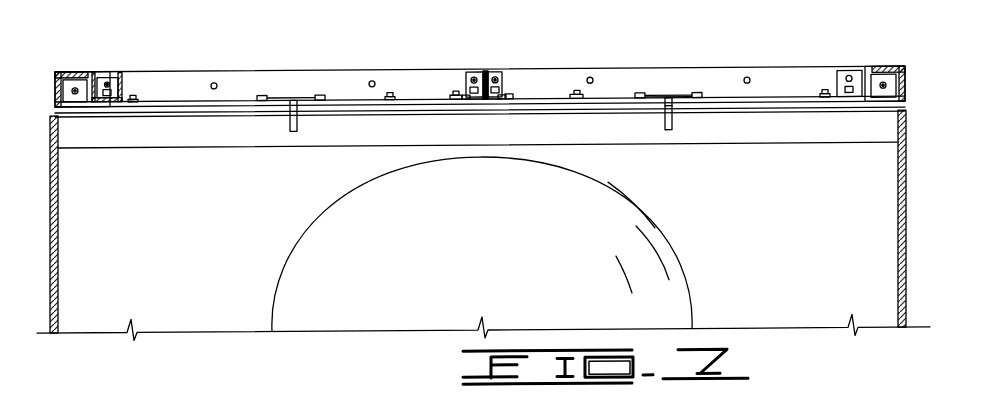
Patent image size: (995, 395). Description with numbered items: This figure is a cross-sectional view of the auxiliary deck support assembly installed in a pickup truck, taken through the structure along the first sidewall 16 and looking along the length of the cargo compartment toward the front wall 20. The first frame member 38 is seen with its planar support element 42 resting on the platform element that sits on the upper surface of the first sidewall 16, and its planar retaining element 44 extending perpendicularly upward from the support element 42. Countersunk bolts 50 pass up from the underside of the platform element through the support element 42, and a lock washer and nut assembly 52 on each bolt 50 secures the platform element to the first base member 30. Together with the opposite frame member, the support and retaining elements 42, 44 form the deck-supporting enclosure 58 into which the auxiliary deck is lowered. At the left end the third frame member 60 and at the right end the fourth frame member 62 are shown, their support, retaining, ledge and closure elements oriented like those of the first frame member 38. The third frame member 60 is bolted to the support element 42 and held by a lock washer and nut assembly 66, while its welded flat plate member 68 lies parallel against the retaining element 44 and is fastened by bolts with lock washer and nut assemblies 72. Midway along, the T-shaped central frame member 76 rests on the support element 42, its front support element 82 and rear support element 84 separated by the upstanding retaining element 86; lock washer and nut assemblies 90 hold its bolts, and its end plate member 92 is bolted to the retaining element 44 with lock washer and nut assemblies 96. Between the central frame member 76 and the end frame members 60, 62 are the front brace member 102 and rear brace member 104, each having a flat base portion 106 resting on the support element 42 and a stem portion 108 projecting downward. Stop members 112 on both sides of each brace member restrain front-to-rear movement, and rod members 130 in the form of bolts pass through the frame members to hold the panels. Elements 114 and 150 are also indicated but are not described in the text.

The first sidewall 16 is at (775, 229).
The front wall 20 is at (62, 243).
The first base member 30 is at (924, 103).
The first frame member 38 is at (723, 72).
The support element 42 is at (763, 113).
The retaining element 44 is at (787, 82).
The countersunk bolt 50 is at (392, 96).
The lock washer and nut assembly 52 is at (150, 100).
The deck-supporting enclosure 58 is at (566, 82).
The third frame member 60 is at (72, 70).
The fourth frame member 62 is at (883, 66).
The lock washer and nut assembly 66 is at (141, 97).
The flat plate member 68 is at (96, 78).
The lock washer and nut assembly 72 is at (120, 78).
The central frame member 76 is at (486, 74).
The front support element 82 is at (470, 104).
The rear support element 84 is at (492, 104).
The retaining element 86 is at (492, 78).
The lock washer and nut assembly 90 is at (445, 102).
The flat plate member 92 is at (470, 90).
The lock washer and nut assembly 96 is at (471, 75).
The front brace member 102 is at (292, 124).
The rear brace member 104 is at (675, 124).
The base portion 106 is at (665, 97).
The stem portion 108 is at (665, 120).
The stop member 112 is at (272, 97).
The member 114 is at (170, 394).
The rod member 130 is at (218, 84).
The member 150 is at (875, 394).